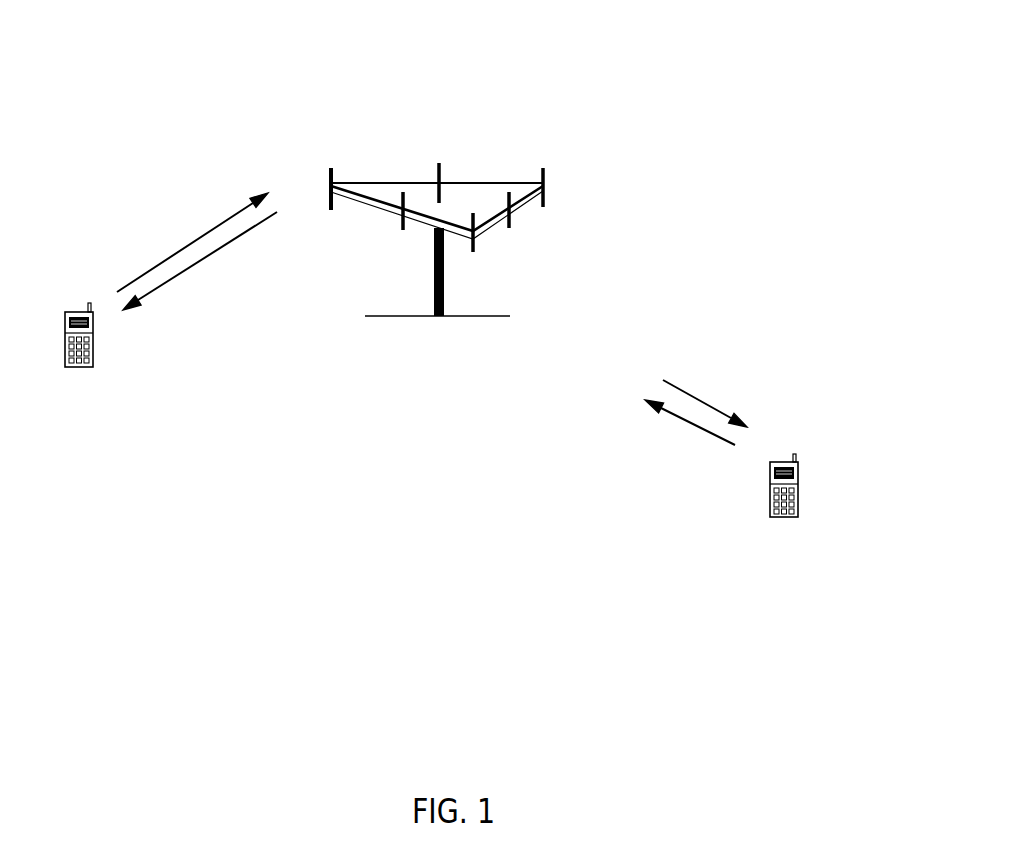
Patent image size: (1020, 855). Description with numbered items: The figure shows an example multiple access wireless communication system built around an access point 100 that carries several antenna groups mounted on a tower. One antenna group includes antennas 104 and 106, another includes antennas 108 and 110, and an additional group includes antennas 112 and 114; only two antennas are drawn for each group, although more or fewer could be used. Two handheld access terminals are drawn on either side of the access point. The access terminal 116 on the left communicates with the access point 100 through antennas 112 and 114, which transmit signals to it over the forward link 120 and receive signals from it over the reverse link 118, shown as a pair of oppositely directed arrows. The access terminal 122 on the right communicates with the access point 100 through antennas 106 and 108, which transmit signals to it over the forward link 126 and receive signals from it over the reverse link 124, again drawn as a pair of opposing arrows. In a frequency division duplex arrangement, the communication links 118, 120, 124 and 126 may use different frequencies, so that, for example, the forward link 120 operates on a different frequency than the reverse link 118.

The access point 100 is at (420, 317).
The antenna 104 is at (477, 252).
The antenna 106 is at (510, 228).
The antenna 108 is at (543, 207).
The antenna 110 is at (439, 165).
The antenna 112 is at (331, 183).
The antenna 114 is at (403, 230).
The access terminal 116 is at (78, 308).
The reverse link 118 is at (190, 242).
The forward link 120 is at (210, 260).
The access terminal 122 is at (782, 460).
The reverse link 124 is at (680, 415).
The forward link 126 is at (710, 405).